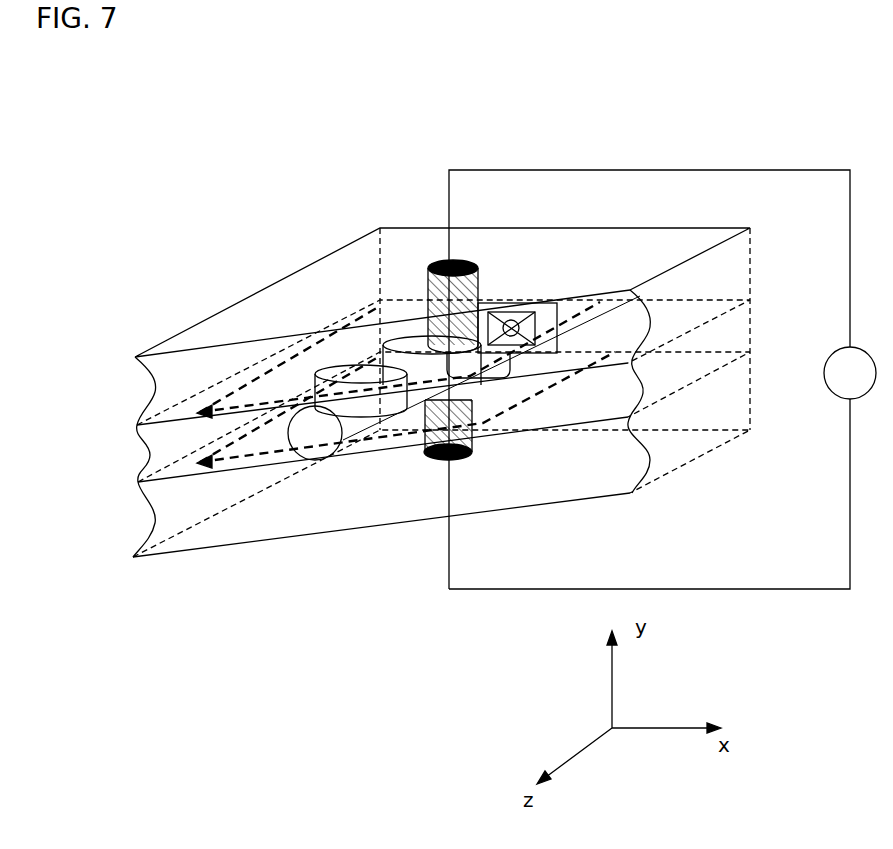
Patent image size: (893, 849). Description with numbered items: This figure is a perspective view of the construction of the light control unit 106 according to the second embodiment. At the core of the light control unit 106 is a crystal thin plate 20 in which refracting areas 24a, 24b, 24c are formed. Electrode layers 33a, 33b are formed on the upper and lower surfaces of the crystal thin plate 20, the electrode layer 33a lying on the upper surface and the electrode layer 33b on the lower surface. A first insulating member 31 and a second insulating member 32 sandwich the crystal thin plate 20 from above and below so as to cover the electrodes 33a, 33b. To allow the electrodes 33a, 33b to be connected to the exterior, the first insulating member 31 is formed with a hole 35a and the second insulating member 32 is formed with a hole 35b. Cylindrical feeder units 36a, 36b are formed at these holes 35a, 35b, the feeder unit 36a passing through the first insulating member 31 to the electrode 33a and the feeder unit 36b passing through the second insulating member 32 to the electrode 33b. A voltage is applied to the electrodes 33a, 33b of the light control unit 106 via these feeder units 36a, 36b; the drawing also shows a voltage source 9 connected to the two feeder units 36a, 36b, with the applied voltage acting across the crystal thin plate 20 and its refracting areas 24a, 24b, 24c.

The light control unit 106 is at (134, 137).
The voltage application circuit with voltmeter 9 is at (582, 292).
The crystal thin plate 20 is at (153, 439).
The first insulating member 31 is at (163, 367).
The second insulating member 32 is at (150, 497).
The refracting area 24a is at (315, 367).
The refracting area 24b is at (420, 340).
The refracting area 24c is at (512, 312).
The electrode layer 33a is at (245, 383).
The electrode layer 33b is at (213, 468).
The hole 35a is at (437, 262).
The hole 35b is at (447, 462).
The cylindrical feeder unit 36a is at (482, 318).
The cylindrical feeder unit 36b is at (425, 420).